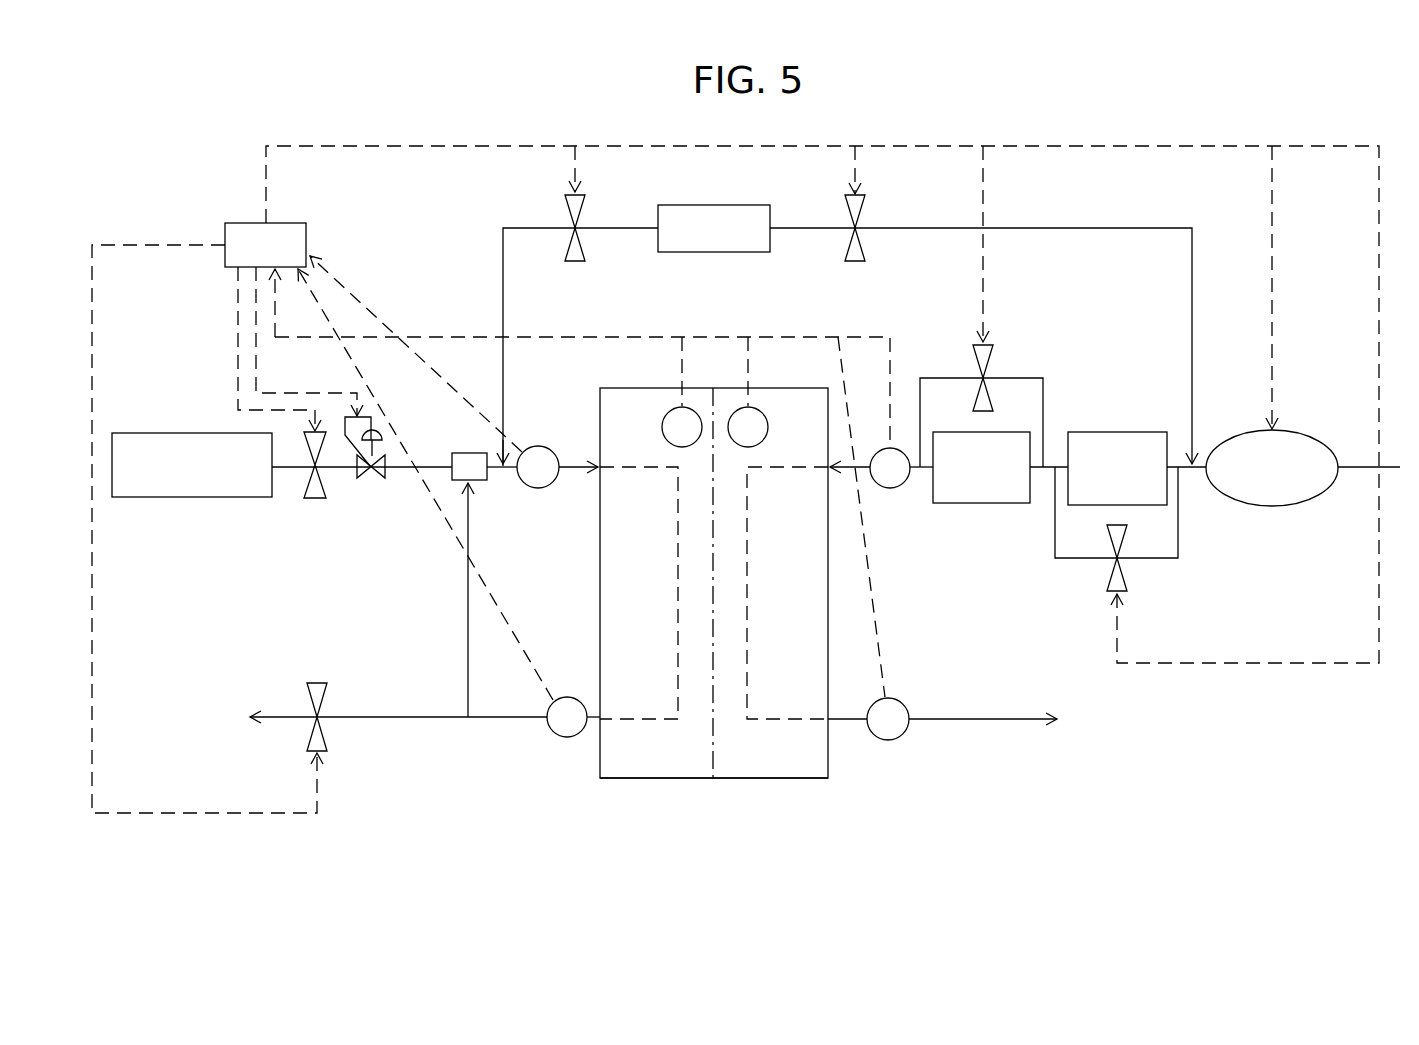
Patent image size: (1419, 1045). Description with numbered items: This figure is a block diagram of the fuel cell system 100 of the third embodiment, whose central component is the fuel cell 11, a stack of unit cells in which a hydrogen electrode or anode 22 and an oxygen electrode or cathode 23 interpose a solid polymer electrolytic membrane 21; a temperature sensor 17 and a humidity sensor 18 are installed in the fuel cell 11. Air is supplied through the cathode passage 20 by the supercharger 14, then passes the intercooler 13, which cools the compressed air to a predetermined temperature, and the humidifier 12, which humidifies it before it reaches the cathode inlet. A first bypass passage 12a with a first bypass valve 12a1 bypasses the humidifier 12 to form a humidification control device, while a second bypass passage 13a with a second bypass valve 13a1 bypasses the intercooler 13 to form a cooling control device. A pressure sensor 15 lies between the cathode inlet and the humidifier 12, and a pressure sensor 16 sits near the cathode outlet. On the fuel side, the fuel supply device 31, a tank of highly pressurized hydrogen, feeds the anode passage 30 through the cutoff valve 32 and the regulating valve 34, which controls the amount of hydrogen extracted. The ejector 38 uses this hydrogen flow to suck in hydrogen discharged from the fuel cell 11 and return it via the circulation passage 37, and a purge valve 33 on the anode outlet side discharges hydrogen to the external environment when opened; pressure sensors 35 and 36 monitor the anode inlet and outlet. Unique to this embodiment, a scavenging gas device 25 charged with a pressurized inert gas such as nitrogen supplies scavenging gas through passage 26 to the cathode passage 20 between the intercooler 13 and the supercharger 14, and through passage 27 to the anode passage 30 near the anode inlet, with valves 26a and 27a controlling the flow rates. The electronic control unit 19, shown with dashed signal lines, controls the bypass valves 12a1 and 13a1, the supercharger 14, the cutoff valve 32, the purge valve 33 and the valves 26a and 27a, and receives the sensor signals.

The fuel cell system 100 is at (905, 130).
The electronic control unit 19 is at (236, 222).
The passage 27 is at (503, 290).
The valve 27a is at (578, 262).
The scavenging gas device 25 is at (685, 252).
The passage 26 is at (1192, 293).
The valve 26a is at (858, 262).
The fuel cell 11 is at (714, 557).
The temperature sensor 17 is at (662, 428).
The humidity sensor 18 is at (768, 428).
The solid polymer electrolytic membrane 21 is at (713, 745).
The hydrogen electrode (anode) 22 is at (655, 765).
The oxygen electrode (cathode) 23 is at (798, 765).
The pressure sensor 35 is at (538, 489).
The pressure sensor 15 is at (897, 488).
The first bypass passage 12a is at (1045, 392).
The first bypass valve 12a1 is at (990, 360).
The humidifier 12 is at (990, 503).
The intercooler 13 is at (1115, 432).
The second bypass passage 13a is at (1085, 558).
The second bypass valve 13a1 is at (1128, 575).
The supercharger 14 is at (1255, 506).
The cathode passage 20 is at (1358, 475).
The fuel supply device 31 is at (198, 497).
The anode passage 30 is at (405, 470).
The cutoff valve 32 is at (315, 498).
The regulating valve 34 is at (376, 478).
The ejector 38 is at (468, 453).
The circulation passage 37 is at (468, 652).
The purge valve 33 is at (315, 683).
The pressure sensor 36 is at (565, 737).
The pressure sensor 16 is at (888, 740).